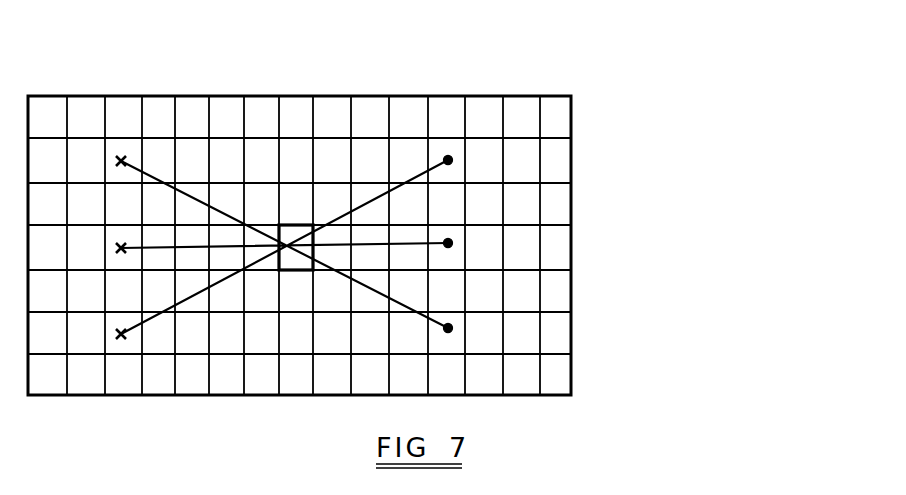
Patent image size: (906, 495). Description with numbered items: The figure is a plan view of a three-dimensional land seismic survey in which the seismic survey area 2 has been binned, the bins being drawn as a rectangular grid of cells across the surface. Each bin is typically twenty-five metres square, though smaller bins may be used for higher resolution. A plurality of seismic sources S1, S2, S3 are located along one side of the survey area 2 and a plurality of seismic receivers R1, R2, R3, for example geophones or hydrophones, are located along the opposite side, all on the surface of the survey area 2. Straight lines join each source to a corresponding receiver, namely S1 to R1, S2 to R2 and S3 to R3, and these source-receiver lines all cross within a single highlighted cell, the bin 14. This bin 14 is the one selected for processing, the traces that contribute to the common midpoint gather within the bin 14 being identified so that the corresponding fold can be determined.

The seismic survey area 2 is at (590, 144).
The bin 14 is at (292, 230).
The seismic source S1 is at (98, 160).
The seismic source S2 is at (98, 247).
The seismic source S3 is at (98, 332).
The seismic receiver R1 is at (472, 328).
The seismic receiver R2 is at (472, 243).
The seismic receiver R3 is at (472, 157).